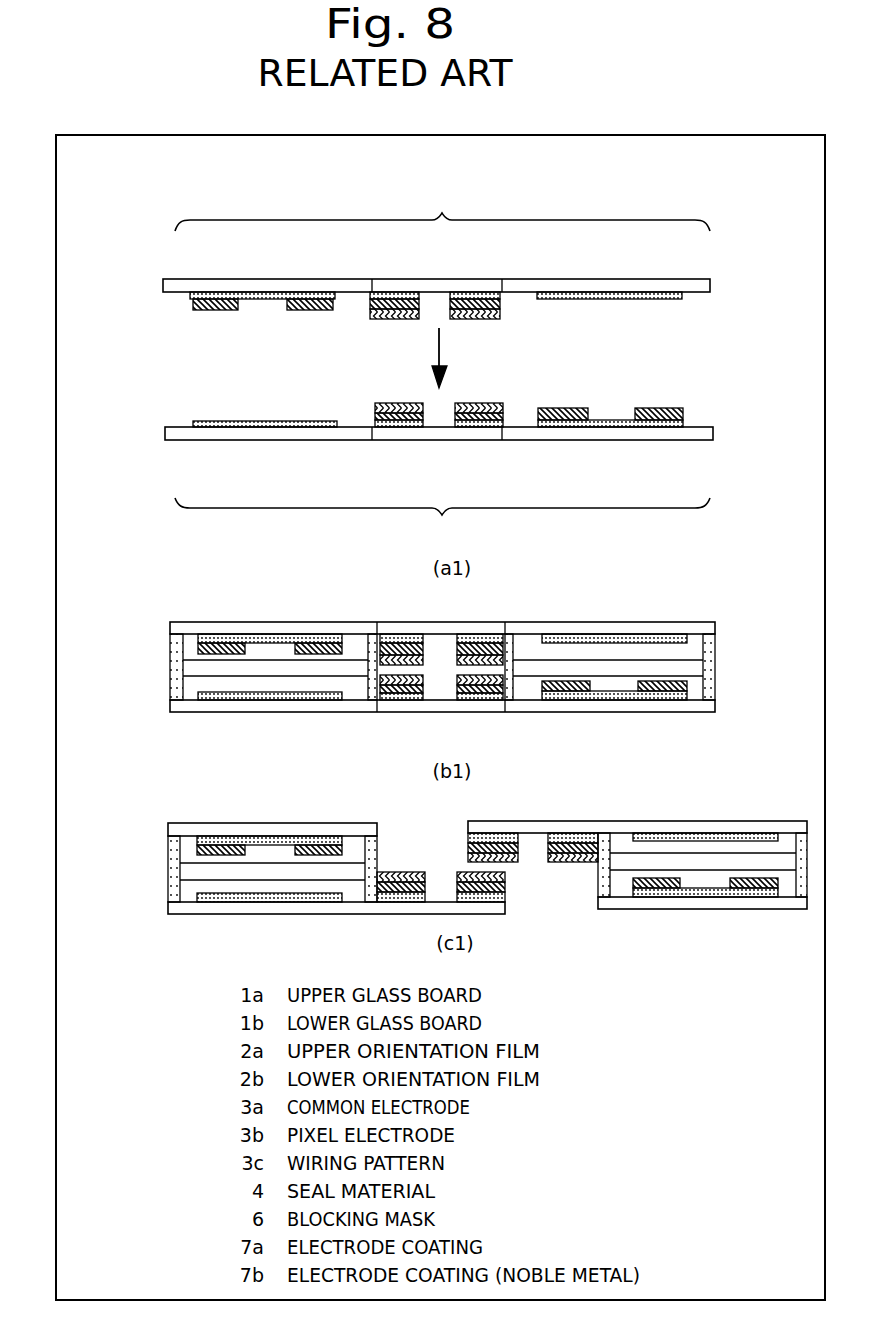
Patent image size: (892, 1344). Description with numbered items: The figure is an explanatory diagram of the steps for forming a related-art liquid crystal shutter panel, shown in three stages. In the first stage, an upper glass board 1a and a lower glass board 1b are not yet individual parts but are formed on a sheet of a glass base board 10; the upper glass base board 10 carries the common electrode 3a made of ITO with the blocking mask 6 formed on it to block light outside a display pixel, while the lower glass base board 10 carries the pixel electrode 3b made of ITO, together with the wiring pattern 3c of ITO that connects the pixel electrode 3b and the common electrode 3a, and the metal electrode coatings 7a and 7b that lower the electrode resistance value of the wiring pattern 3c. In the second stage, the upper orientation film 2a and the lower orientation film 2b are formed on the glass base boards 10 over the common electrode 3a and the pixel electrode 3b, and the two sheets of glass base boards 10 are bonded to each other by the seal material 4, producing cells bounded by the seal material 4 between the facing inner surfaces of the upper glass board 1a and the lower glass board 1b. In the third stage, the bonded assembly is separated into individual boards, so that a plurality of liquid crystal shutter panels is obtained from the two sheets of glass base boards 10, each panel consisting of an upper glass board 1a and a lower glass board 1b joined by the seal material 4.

The upper glass board 1a is at (163, 283).
The lower glass board 1b is at (710, 279).
The upper orientation film 2a is at (188, 648).
The lower orientation film 2b is at (188, 691).
The common electrode 3a is at (192, 299).
The pixel electrode 3b is at (683, 299).
The wiring pattern 3c is at (393, 292).
The seal material 4 is at (172, 678).
The blocking mask 6 is at (290, 310).
The metal electrode coating 7a is at (370, 306).
The metal electrode coating 7b is at (407, 322).
The glass base board 10 is at (434, 740).